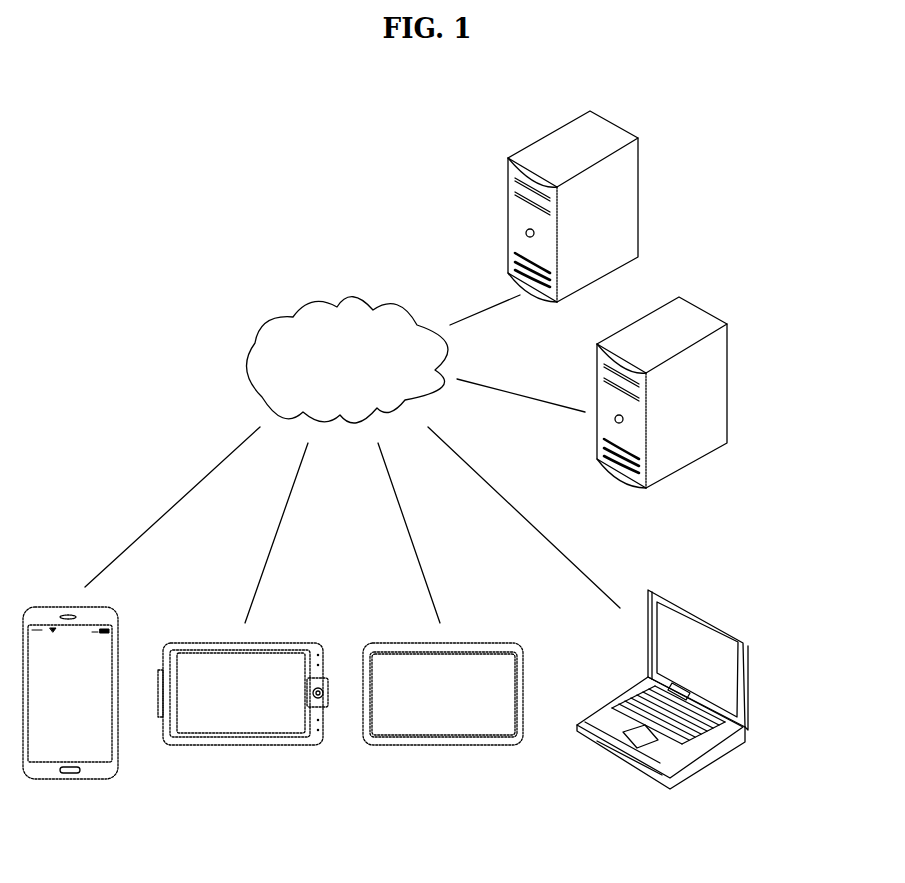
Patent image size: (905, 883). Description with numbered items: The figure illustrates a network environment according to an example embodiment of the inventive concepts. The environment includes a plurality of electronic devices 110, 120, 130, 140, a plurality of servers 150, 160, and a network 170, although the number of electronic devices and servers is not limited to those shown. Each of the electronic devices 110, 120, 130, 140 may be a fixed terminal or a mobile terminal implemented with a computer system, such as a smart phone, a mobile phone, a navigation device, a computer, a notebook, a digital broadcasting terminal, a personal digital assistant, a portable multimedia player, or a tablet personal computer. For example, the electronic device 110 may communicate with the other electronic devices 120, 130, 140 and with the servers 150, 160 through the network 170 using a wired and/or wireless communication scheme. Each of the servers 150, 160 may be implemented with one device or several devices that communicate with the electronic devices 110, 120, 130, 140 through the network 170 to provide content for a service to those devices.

The electronic device 110 is at (68, 777).
The electronic device 120 is at (245, 745).
The electronic device 130 is at (444, 745).
The electronic device 140 is at (752, 688).
The server 150 is at (727, 383).
The server 160 is at (638, 195).
The network 170 is at (350, 297).